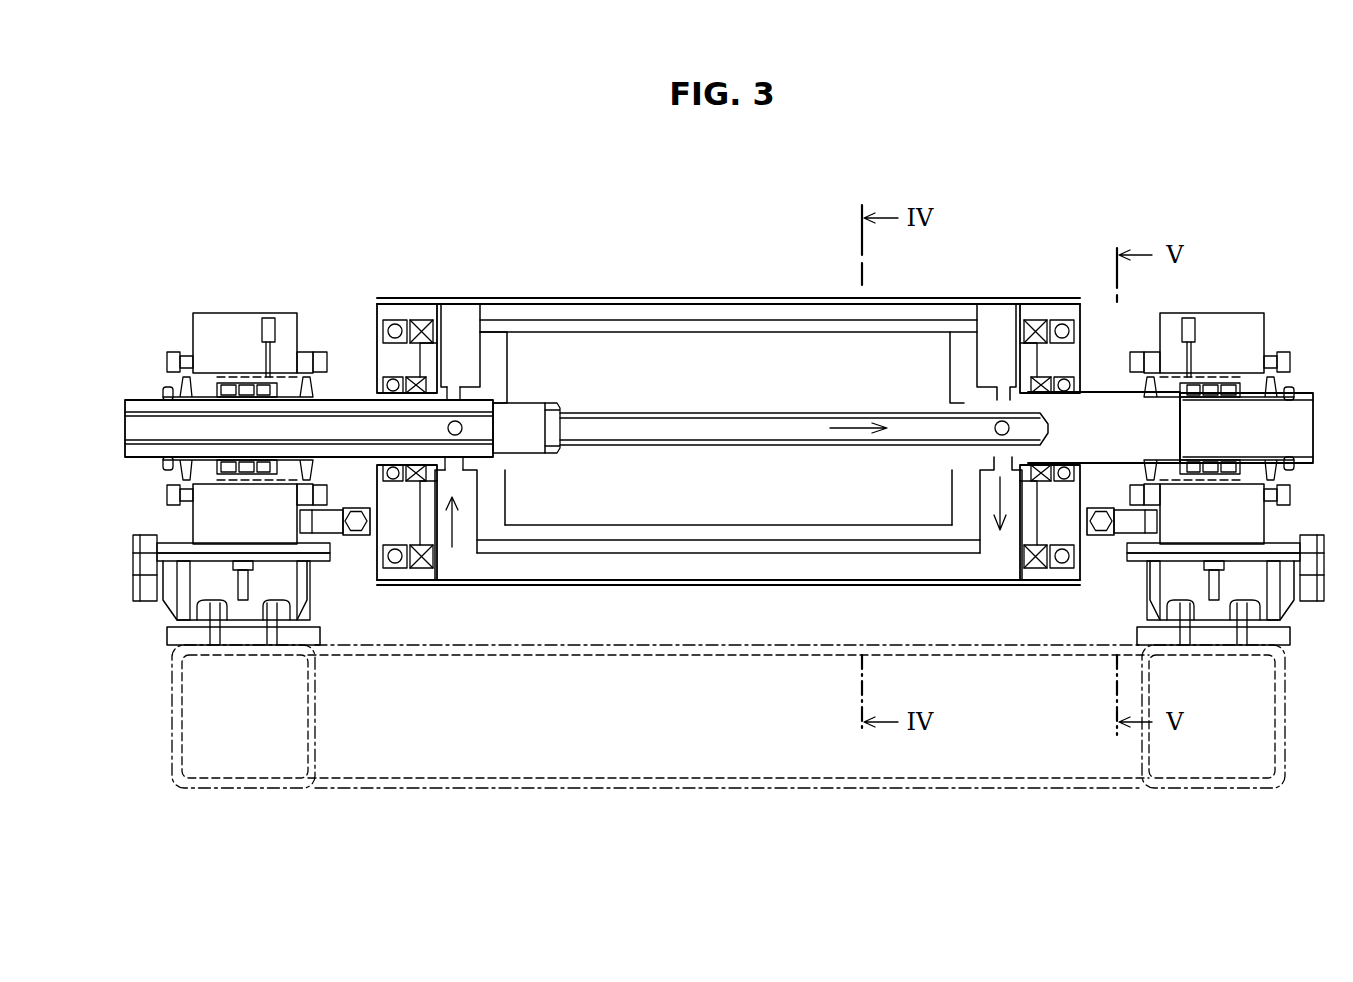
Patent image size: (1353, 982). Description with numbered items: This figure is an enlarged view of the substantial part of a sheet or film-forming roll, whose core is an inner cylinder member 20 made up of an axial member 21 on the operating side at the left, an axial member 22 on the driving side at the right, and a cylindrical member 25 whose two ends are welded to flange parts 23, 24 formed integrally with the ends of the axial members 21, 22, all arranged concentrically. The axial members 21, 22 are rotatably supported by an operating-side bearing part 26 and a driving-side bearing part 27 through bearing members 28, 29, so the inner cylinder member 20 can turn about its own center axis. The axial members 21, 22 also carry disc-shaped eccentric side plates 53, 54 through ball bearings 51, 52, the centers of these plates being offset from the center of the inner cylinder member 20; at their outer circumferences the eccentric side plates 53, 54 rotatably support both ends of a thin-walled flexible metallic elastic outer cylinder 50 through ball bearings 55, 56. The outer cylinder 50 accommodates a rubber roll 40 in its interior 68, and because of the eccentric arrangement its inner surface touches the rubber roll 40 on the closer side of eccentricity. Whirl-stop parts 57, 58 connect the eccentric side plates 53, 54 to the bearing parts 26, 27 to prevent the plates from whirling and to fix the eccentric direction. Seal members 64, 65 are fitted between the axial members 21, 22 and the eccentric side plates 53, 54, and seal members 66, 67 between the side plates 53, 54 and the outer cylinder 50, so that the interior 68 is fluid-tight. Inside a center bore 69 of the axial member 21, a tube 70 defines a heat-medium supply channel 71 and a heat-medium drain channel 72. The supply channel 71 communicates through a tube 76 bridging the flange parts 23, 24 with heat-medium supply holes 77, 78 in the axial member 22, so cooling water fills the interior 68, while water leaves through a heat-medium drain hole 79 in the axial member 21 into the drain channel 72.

The inner cylinder member 20 is at (963, 330).
The axial member on operating side 21 is at (347, 403).
The axial member on driving side 22 is at (1092, 428).
The flange part 23 is at (487, 512).
The flange part 24 is at (968, 520).
The cylindrical member 25 is at (616, 318).
The operating-side bearing part 26 is at (245, 315).
The driving-side bearing part 27 is at (1217, 323).
The bearing member 28 is at (247, 377).
The bearing member 29 is at (1200, 368).
The rubber roll 40 is at (672, 310).
The metallic elastic outer cylinder 50 is at (733, 297).
The ball bearing 51 is at (383, 388).
The ball bearing 52 is at (1082, 353).
The eccentric side plate 53 is at (445, 345).
The eccentric side plate 54 is at (1025, 362).
The ball bearing 55 is at (398, 355).
The ball bearing 56 is at (1065, 360).
The whirl-stop part 57 is at (352, 540).
The whirl-stop part 58 is at (1093, 540).
The seal member 64 is at (415, 560).
The seal member 65 is at (1042, 560).
The seal member 66 is at (430, 340).
The seal member 67 is at (1053, 312).
The interior 68 is at (653, 572).
The center bore 69 is at (175, 412).
The tube 70 is at (492, 388).
The heat-medium supply channel 71 is at (520, 408).
The heat-medium drain channel 72 is at (468, 380).
The tube 76 is at (757, 446).
The heat-medium supply hole 77 is at (975, 420).
The heat-medium supply hole 78 is at (1000, 457).
The heat-medium drain hole 79 is at (453, 395).